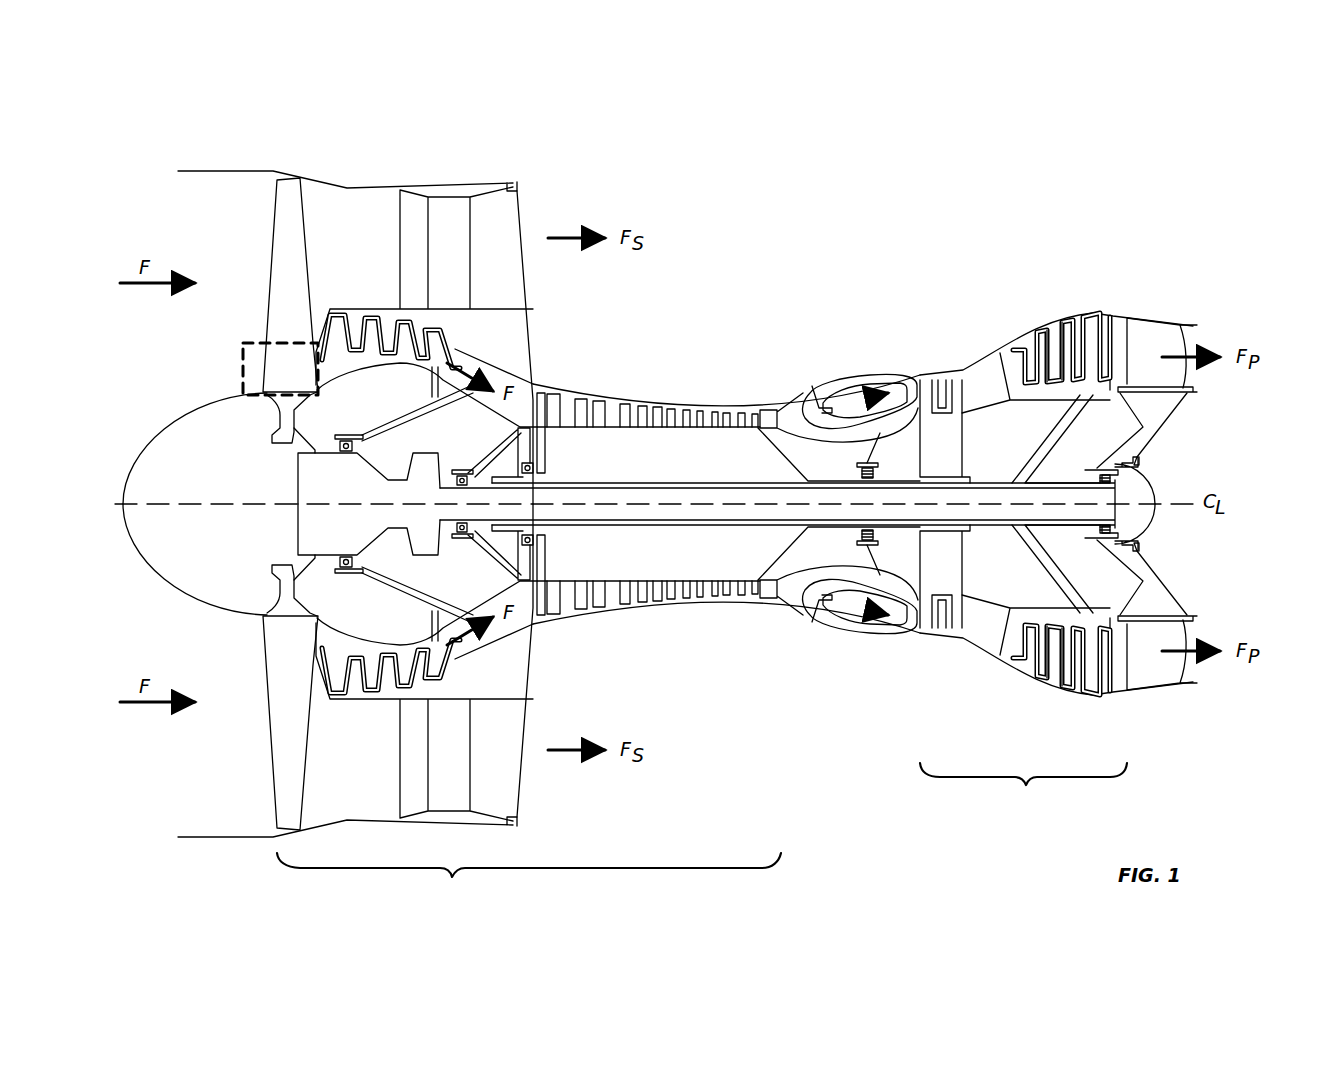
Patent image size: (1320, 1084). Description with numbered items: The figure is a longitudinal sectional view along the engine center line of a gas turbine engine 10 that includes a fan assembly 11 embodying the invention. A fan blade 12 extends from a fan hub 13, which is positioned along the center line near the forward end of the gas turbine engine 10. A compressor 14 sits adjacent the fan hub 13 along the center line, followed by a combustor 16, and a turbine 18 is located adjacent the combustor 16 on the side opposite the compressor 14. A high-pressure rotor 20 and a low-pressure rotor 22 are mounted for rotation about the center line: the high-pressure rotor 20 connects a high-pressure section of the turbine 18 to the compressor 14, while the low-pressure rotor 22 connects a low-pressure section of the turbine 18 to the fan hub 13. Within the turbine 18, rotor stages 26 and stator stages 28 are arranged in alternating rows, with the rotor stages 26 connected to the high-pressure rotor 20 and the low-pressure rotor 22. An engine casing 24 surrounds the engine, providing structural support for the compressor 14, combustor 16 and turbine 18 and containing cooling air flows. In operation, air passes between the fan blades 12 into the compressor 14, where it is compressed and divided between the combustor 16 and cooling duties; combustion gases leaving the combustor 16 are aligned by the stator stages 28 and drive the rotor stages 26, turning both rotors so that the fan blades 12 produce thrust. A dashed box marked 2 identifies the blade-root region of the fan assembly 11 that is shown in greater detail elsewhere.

The gas turbine engine 10 is at (154, 147).
The fan assembly 11 is at (246, 212).
The fan blade 12 is at (287, 257).
The fan hub 13 is at (267, 402).
The compressor 14 is at (529, 545).
The combustor 16 is at (863, 383).
The turbine 18 is at (1058, 563).
The high-pressure rotor 20 is at (768, 536).
The low-pressure rotor 22 is at (680, 512).
The engine casing 24 is at (841, 383).
The rotor stages 26 is at (1074, 326).
The stator stages 28 is at (1059, 326).
The detail region of FIG. 2 is at (243, 362).